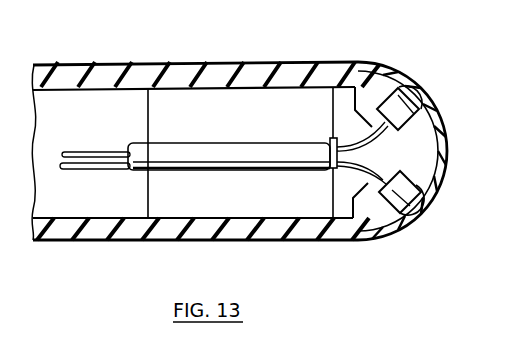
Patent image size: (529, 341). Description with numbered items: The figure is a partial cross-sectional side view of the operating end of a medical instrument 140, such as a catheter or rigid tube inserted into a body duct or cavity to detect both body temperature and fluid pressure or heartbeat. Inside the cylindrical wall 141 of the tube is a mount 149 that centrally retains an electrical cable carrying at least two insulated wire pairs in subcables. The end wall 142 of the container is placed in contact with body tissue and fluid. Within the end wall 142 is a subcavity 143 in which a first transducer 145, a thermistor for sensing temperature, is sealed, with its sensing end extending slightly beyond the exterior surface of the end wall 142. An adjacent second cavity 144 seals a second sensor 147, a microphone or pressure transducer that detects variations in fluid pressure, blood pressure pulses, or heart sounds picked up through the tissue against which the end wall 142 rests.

The medical instrument 140 is at (92, 62).
The cylindrical wall 141 is at (155, 72).
The end wall 142 is at (442, 152).
The subcavity 143 is at (400, 75).
The second cavity 144 is at (430, 190).
The first transducer 145 is at (422, 92).
The second sensor 147 is at (413, 213).
The mount 149 is at (265, 201).